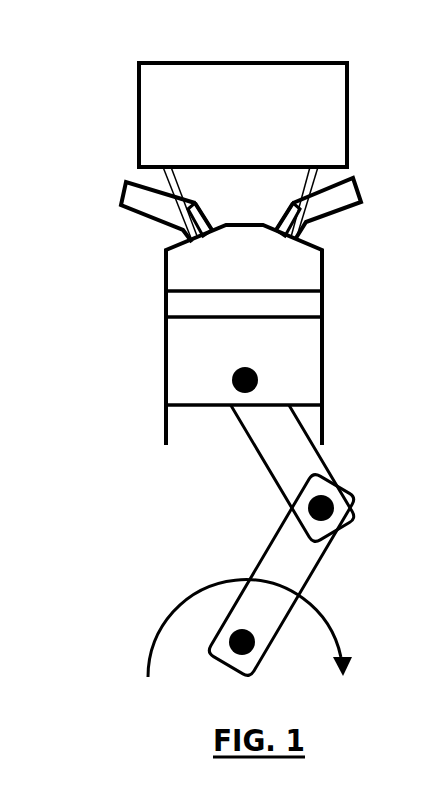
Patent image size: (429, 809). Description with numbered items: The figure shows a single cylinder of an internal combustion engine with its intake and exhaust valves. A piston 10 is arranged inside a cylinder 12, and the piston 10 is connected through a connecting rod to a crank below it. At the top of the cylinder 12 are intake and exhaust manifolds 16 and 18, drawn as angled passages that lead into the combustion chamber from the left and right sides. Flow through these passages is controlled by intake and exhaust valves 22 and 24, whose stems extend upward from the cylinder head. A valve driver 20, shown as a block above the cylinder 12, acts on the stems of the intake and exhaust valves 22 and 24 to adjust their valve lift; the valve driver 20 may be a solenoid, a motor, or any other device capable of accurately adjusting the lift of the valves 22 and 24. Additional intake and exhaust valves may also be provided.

The piston 10 is at (308, 342).
The cylinder 12 is at (323, 277).
The intake manifold 16 is at (133, 213).
The exhaust manifold 18 is at (342, 208).
The valve driver 20 is at (243, 62).
The intake valve 22 is at (178, 183).
The exhaust valve 24 is at (300, 188).